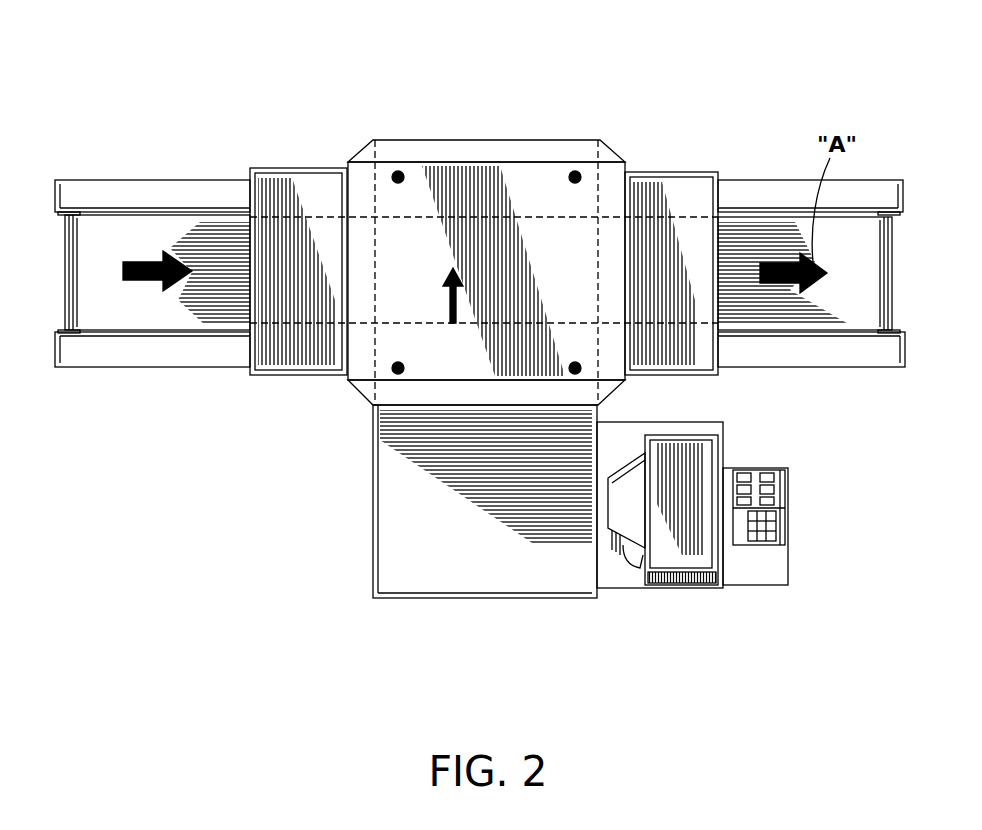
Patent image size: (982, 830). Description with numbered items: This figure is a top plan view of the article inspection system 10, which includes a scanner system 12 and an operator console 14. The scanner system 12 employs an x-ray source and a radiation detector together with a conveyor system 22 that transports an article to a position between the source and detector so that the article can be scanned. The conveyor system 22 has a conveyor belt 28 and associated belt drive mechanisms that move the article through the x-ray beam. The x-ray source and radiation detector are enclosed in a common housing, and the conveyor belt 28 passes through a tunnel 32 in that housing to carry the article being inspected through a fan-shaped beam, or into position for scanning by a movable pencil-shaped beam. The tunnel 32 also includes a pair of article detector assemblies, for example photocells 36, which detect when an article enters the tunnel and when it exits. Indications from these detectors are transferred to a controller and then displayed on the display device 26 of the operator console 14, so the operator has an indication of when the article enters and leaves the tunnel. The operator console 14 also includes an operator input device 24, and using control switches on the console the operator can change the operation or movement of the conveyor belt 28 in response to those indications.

The inspection system 10 is at (541, 210).
The scanner system 12 is at (372, 452).
The operator console 14 is at (660, 547).
The conveyor system 22 is at (152, 231).
The operator input device 24 is at (770, 505).
The display device 26 is at (628, 565).
The conveyor belt 28 is at (58, 265).
The tunnel 32 is at (320, 262).
The photocells 36 is at (397, 176).